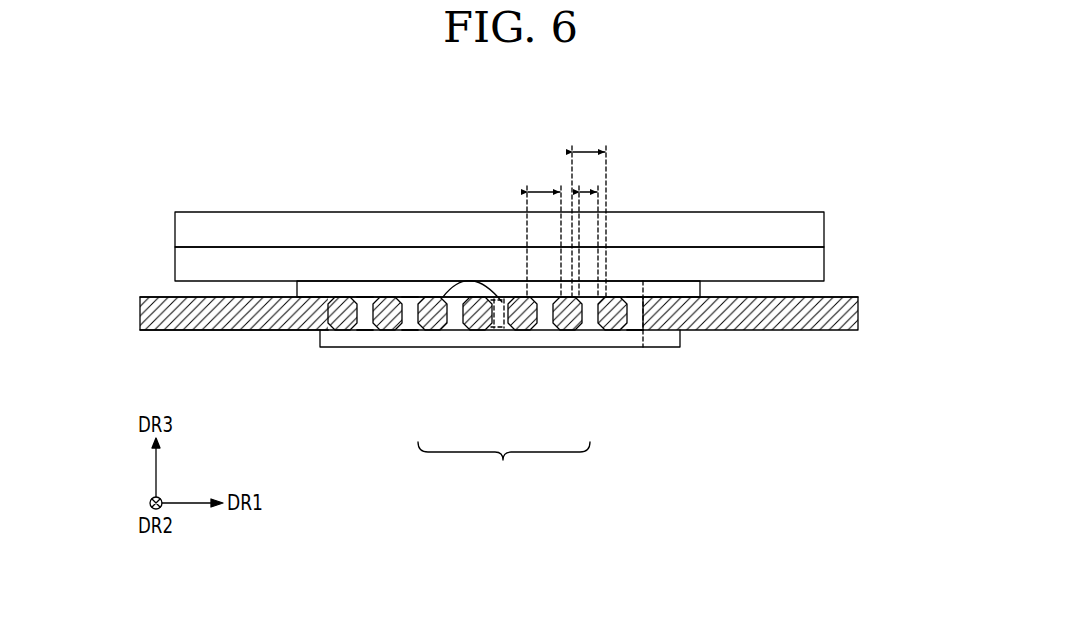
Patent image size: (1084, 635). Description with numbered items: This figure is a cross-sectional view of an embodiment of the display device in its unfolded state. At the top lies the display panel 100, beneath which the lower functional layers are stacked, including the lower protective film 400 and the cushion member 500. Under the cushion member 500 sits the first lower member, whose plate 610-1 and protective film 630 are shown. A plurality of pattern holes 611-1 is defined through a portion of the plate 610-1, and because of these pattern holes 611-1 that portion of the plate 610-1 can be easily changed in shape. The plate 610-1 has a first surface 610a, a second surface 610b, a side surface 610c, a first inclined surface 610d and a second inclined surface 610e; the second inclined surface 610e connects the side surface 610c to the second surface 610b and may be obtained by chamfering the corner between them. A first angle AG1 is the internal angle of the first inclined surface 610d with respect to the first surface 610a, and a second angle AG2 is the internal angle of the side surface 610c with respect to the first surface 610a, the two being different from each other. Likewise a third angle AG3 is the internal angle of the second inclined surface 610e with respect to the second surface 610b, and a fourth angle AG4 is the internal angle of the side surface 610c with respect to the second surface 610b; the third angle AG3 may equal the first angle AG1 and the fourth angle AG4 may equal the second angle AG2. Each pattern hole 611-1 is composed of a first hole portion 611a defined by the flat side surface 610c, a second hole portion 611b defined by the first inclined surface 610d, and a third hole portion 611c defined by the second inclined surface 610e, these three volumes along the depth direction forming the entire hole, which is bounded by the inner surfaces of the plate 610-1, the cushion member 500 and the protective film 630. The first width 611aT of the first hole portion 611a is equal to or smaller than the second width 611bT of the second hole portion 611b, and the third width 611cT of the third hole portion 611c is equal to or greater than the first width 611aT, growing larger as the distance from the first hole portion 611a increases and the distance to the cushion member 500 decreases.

The display panel 100 is at (812, 228).
The lower protective film 400 is at (812, 262).
The cushion member 500 is at (693, 290).
The plate 610-1 is at (848, 312).
The first surface 610a is at (166, 320).
The second surface 610b is at (166, 307).
The side surface 610c is at (643, 347).
The first inclined surface 610d is at (378, 312).
The second inclined surface 610e is at (372, 297).
The first hole portion 611a is at (509, 330).
The second hole portion 611b is at (494, 330).
The third hole portion 611c is at (443, 297).
The pattern hole 611-1 is at (504, 463).
The first width 611aT is at (588, 190).
The second width 611bT is at (536, 230).
The third width 611cT is at (587, 210).
The protective film 630 is at (593, 347).
The first angle AG1 is at (347, 322).
The second angle AG2 is at (660, 320).
The third angle AG3 is at (345, 308).
The fourth angle AG4 is at (657, 307).